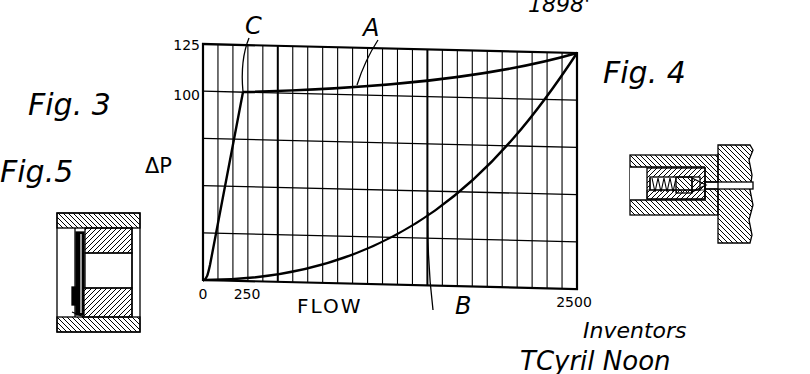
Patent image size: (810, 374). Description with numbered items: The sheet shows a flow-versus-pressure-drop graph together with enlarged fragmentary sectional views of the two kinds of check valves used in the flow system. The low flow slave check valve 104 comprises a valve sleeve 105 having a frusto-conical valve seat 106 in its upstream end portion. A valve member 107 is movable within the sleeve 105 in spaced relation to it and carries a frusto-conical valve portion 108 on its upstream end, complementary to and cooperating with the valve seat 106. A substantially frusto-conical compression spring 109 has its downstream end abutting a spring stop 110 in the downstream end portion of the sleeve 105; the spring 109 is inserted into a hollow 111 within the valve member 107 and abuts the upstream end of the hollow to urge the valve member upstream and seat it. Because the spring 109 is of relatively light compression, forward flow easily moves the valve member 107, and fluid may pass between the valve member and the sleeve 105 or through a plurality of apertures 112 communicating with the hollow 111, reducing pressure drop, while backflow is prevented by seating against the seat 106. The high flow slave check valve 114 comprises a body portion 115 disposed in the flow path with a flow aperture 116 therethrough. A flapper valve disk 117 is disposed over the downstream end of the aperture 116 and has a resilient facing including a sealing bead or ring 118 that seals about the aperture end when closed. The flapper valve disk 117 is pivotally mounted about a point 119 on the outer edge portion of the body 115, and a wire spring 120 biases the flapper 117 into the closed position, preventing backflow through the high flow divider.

In FIG. 4, the low flow slave check valve 104 is at (688, 220).
In FIG. 4, the valve sleeve 105 is at (707, 200).
In FIG. 4, the frusto-conical valve seat 106 is at (708, 178).
In FIG. 4, the valve member 107 is at (655, 215).
In FIG. 4, the frusto-conical valve portion 108 is at (697, 180).
In FIG. 4, the compression spring 109 is at (650, 187).
In FIG. 4, the spring stop 110 is at (652, 178).
In FIG. 4, the hollow 111 is at (690, 176).
In FIG. 4, the apertures 112 is at (683, 192).
In FIG. 5, the high flow slave check valve 114 is at (97, 335).
In FIG. 5, the body portion 115 is at (117, 307).
In FIG. 5, the flow aperture 116 is at (120, 270).
In FIG. 5, the flapper valve disk 117 is at (78, 265).
In FIG. 5, the sealing bead or ring 118 is at (100, 228).
In FIG. 5, the pivot point 119 is at (78, 315).
In FIG. 5, the wire spring 120 is at (73, 293).